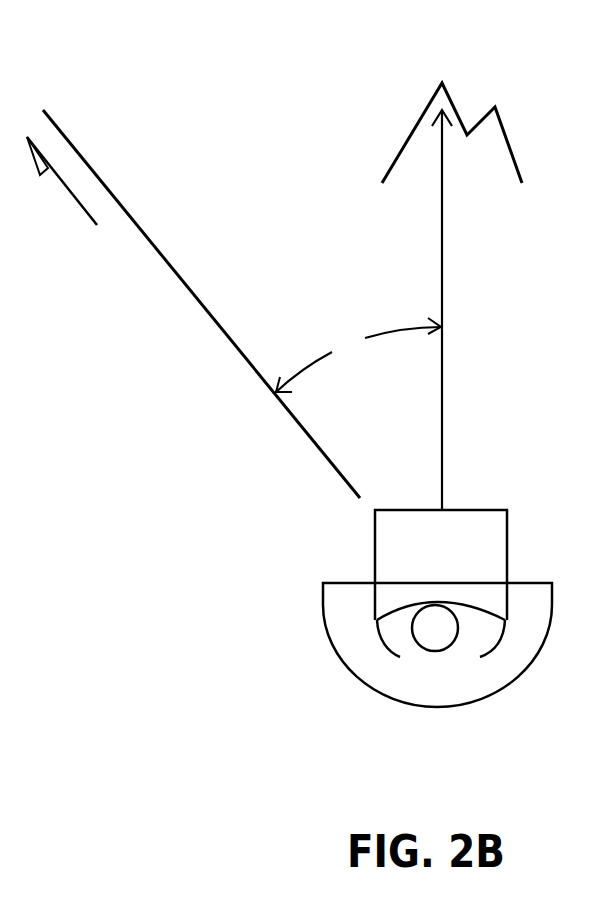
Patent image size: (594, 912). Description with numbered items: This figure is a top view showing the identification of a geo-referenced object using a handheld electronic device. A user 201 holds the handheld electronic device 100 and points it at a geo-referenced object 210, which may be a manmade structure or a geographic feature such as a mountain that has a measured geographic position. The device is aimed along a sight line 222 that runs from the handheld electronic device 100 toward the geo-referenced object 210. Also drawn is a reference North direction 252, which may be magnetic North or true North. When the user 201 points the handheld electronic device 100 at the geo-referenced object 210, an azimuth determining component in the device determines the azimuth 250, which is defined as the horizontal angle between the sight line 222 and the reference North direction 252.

The geo-referenced object 210 is at (442, 83).
The sight line 222 is at (443, 225).
The azimuth θ 250 is at (344, 335).
The reference North direction 252 is at (202, 302).
The handheld electronic device 100 is at (483, 530).
The user 201 is at (458, 682).